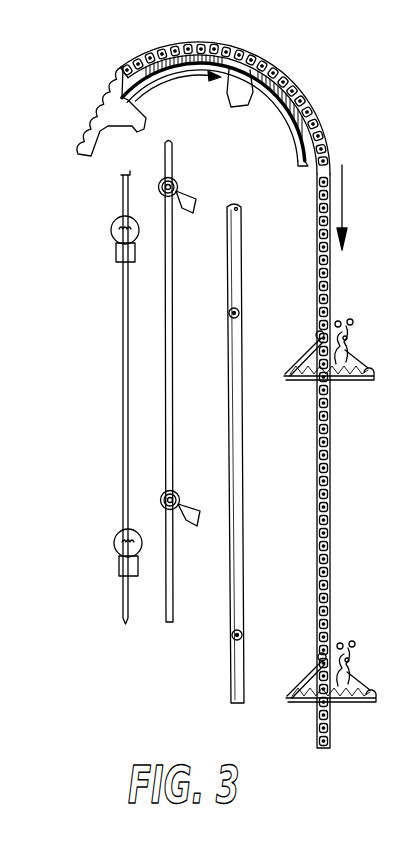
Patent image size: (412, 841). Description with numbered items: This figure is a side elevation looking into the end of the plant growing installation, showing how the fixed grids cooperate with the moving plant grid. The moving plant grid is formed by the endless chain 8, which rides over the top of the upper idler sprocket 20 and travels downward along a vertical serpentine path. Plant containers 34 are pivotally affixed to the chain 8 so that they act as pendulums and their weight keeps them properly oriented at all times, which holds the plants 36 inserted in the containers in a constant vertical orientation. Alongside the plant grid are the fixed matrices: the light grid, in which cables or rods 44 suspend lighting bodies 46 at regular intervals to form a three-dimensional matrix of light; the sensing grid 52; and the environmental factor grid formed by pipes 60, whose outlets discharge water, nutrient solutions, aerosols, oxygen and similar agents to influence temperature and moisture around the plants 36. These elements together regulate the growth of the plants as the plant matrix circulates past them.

The endless chain 8 is at (330, 268).
The upper idler sprocket 20 is at (303, 98).
The plant container 34 is at (360, 378).
The plant 36 is at (352, 334).
The cable or rod 44 is at (122, 194).
The lighting body 46 is at (113, 232).
The sensing grid 52 is at (190, 194).
The pipe 60 is at (242, 268).